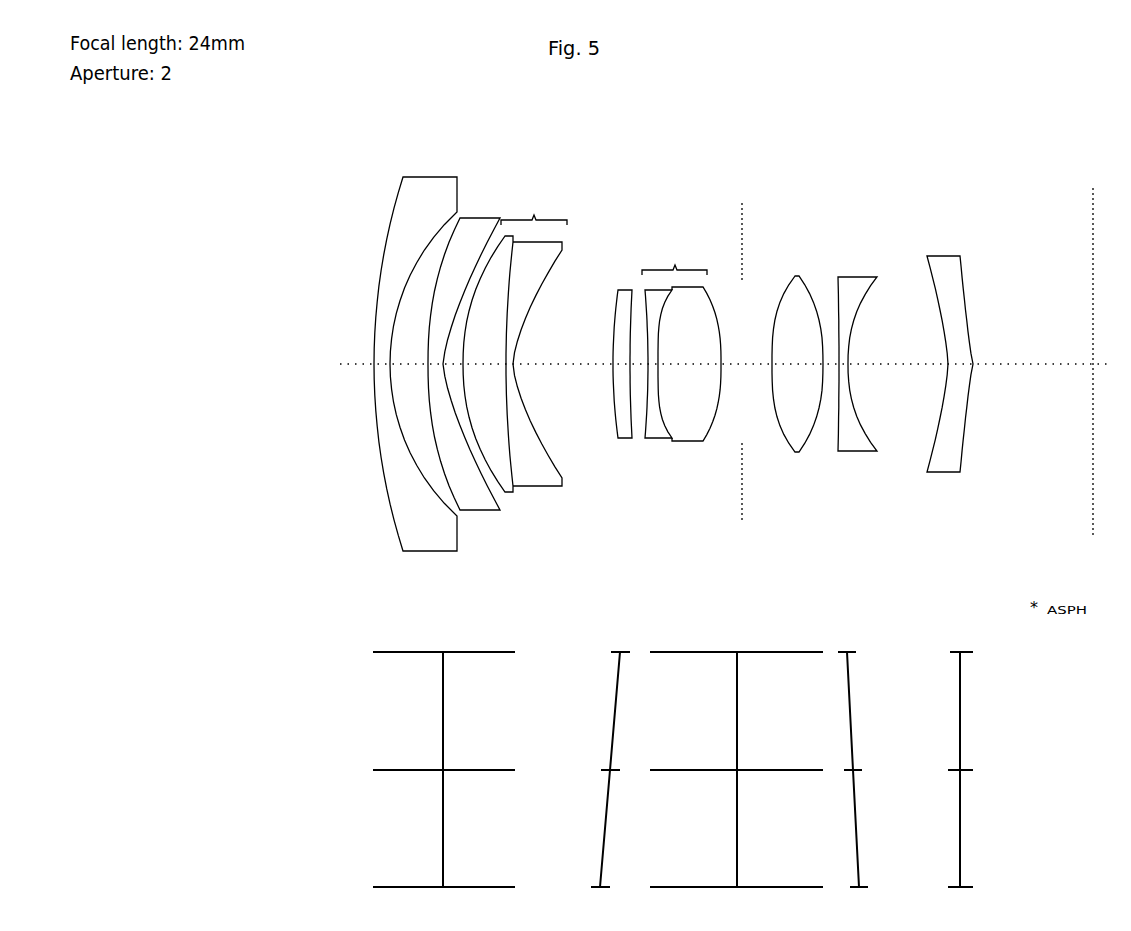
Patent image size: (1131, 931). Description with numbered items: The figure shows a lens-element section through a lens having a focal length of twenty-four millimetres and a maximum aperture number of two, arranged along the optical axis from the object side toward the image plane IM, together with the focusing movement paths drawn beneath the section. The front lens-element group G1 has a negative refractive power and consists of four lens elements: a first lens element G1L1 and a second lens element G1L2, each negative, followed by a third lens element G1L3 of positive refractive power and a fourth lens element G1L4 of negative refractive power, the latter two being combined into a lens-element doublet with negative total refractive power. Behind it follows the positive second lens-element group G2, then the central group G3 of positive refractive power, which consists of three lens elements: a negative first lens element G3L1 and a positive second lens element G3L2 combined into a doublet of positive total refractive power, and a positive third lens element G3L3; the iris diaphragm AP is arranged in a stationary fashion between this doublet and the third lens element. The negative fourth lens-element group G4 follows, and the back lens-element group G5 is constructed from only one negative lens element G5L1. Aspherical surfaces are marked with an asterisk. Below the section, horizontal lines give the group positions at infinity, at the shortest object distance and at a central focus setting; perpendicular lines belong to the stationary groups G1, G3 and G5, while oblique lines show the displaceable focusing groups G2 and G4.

The first lens-element group G1 is at (515, 618).
The first lens element of the first lens-element group G1L1 is at (415, 372).
The second lens element of the first lens-element group G1L2 is at (465, 373).
The third lens element of the first lens-element group G1L3 is at (509, 372).
The fourth lens element of the first lens-element group G1L4 is at (549, 353).
The second lens-element group G2 is at (612, 618).
The third lens-element group G3 is at (823, 618).
The first lens element of the central group G3L1 is at (662, 377).
The second lens element of the central group G3L2 is at (684, 356).
The third lens element of the central group G3L3 is at (797, 373).
The fourth lens-element group G4 is at (857, 618).
The fifth lens-element group G5 is at (948, 618).
The lens element of the back lens-element group G5L1 is at (947, 375).
The iris diaphragm AP is at (740, 379).
The image plane IM is at (1092, 381).